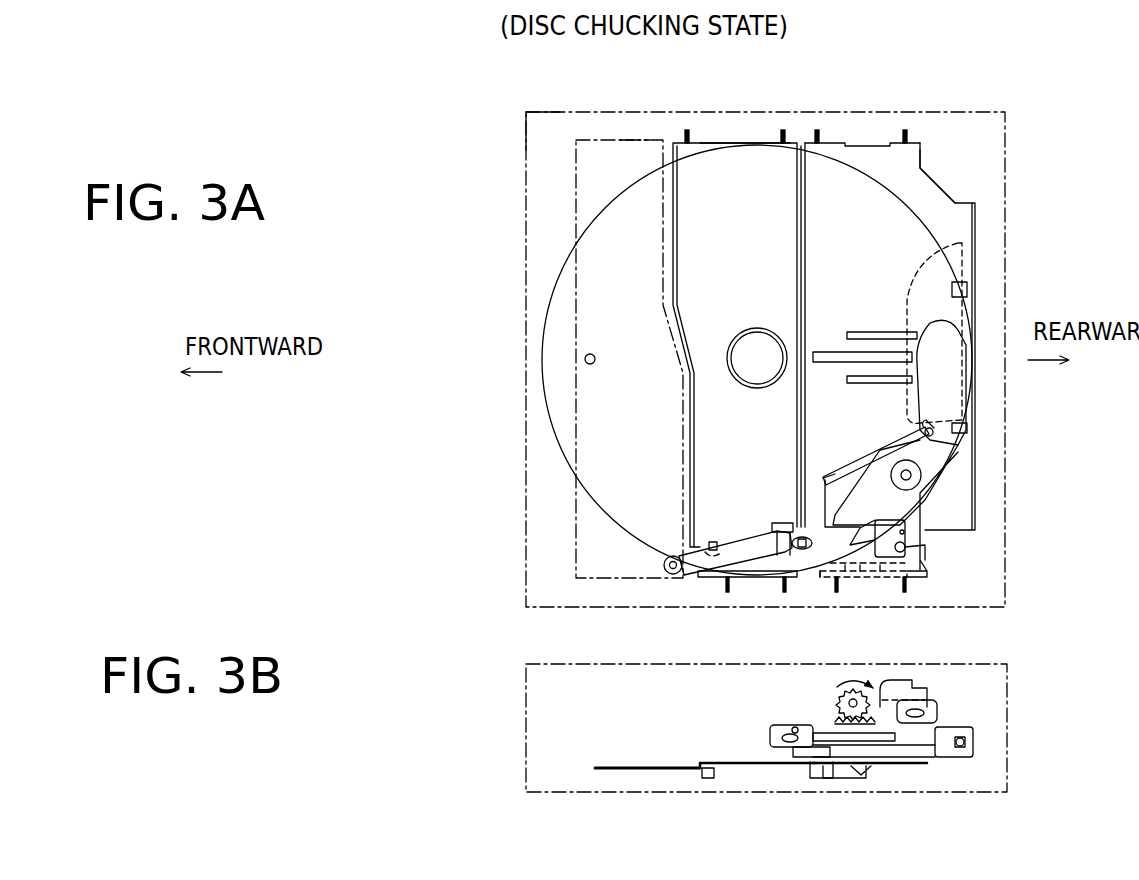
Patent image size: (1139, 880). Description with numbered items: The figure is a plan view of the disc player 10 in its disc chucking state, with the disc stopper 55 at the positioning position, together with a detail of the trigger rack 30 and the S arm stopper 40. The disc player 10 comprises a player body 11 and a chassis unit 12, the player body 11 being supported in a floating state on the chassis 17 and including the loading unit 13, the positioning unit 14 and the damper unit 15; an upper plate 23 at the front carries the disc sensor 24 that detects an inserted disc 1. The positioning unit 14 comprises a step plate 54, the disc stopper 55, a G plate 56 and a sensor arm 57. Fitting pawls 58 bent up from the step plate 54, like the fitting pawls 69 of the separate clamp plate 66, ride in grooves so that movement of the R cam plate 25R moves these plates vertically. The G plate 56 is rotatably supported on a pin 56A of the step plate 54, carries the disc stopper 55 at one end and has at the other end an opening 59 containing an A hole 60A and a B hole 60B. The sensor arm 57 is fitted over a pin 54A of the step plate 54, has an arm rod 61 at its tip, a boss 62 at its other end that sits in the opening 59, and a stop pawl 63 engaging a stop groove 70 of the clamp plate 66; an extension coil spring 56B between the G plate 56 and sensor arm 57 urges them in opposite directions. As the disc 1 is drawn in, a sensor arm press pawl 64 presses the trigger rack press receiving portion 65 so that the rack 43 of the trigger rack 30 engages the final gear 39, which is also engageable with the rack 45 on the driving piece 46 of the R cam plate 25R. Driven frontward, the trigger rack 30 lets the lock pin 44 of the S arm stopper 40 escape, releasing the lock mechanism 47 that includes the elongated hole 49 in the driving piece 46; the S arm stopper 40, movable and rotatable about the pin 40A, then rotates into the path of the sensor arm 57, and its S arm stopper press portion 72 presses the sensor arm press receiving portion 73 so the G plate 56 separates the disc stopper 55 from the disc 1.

In FIG. 3A, the disc 1 is at (550, 292).
In FIG. 3A, the disc player 10 is at (1024, 104).
In FIG. 3A, the player body 11 is at (985, 160).
In FIG. 3A, the chassis unit 12 is at (548, 110).
In FIG. 3A, the loading unit 13 is at (604, 133).
In FIG. 3A, the positioning unit 14 is at (864, 139).
In FIG. 3A, the damper unit 15 is at (726, 138).
In FIG. 3A, the chassis 17 is at (524, 177).
In FIG. 3B, the chassis 17 is at (524, 706).
In FIG. 3A, the upper plate 23 is at (634, 138).
In FIG. 3A, the disc sensor 24 is at (586, 362).
In FIG. 3B, the R cam plate 25R is at (625, 771).
In FIG. 3B, the trigger rack 30 is at (775, 728).
In FIG. 3B, the final gear 39 is at (840, 701).
In FIG. 3B, the S arm stopper 40 is at (975, 742).
In FIG. 3B, the pin 40A is at (962, 748).
In FIG. 3B, the rack 43 is at (877, 700).
In FIG. 3B, the lock pin 44 is at (920, 710).
In FIG. 3B, the rack 45 is at (875, 712).
In FIG. 3B, the driving piece 46 is at (785, 755).
In FIG. 3B, the lock mechanism 47 is at (942, 687).
In FIG. 3B, the elongated hole 49 is at (935, 705).
In FIG. 3A, the step plate 54 is at (926, 155).
In FIG. 3A, the pin 54A is at (808, 535).
In FIG. 3A, the disc stopper 55 is at (960, 262).
In FIG. 3A, the G plate 56 is at (965, 470).
In FIG. 3A, the pin 56A is at (920, 470).
In FIG. 3A, the extension coil spring 56B is at (892, 432).
In FIG. 3A, the sensor arm 57 is at (757, 530).
In FIG. 3A, the fitting pawls 58 is at (818, 128).
In FIG. 3A, the opening 59 is at (905, 506).
In FIG. 3A, the A hole 60A is at (858, 525).
In FIG. 3A, the B hole 60B is at (920, 548).
In FIG. 3A, the arm rod 61 is at (668, 575).
In FIG. 3A, the boss 62 is at (905, 530).
In FIG. 3A, the stop pawl 63 is at (713, 542).
In FIG. 3A, the sensor arm press pawl 64 is at (822, 578).
In FIG. 3B, the trigger rack press receiving portion 65 is at (826, 768).
In FIG. 3A, the clamp plate 66 is at (760, 141).
In FIG. 3A, the fitting pawls 69 is at (688, 128).
In FIG. 3A, the stop groove 70 is at (712, 578).
In FIG. 3B, the S arm stopper press portion 72 is at (880, 765).
In FIG. 3A, the sensor arm press receiving portion 73 is at (935, 572).